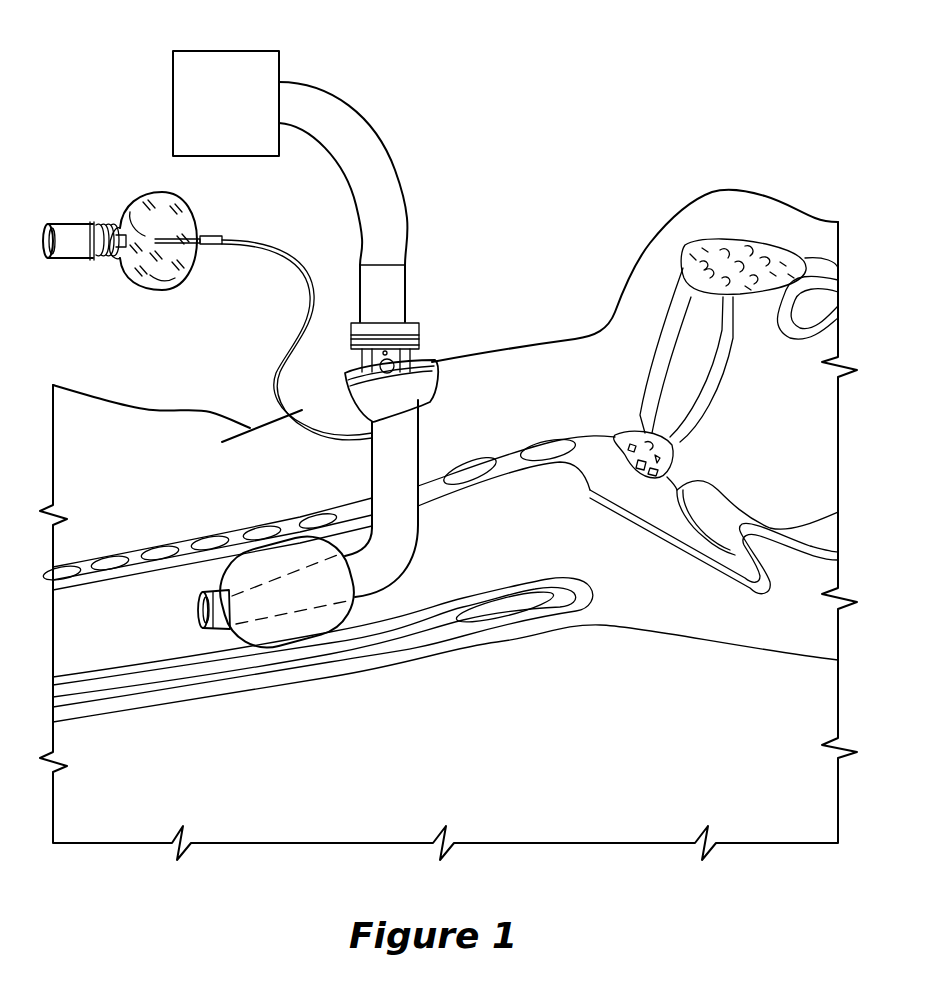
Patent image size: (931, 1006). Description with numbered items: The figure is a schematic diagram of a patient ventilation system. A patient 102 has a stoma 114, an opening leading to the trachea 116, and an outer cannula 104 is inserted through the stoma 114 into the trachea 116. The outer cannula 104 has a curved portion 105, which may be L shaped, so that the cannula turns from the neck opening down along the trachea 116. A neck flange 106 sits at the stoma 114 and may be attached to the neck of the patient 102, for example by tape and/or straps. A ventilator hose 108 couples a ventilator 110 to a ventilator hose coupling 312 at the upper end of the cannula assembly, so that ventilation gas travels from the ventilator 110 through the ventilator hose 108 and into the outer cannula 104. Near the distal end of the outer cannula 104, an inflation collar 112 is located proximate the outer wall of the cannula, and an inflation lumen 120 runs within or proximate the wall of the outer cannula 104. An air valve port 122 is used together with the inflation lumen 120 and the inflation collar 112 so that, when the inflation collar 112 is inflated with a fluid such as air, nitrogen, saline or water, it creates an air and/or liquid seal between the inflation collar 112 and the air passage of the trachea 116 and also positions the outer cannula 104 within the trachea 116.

The patient 102 is at (548, 340).
The outer cannula 104 is at (372, 493).
The curved portion 105 is at (412, 541).
The neck flange 106 is at (410, 375).
The ventilator hose 108 is at (392, 142).
The ventilator 110 is at (280, 60).
The inflation collar 112 is at (262, 566).
The stoma 114 is at (435, 384).
The trachea 116 is at (140, 582).
The inflation lumen 120 is at (419, 442).
The air valve port 122 is at (160, 290).
The ventilator hose coupling 312 is at (410, 294).